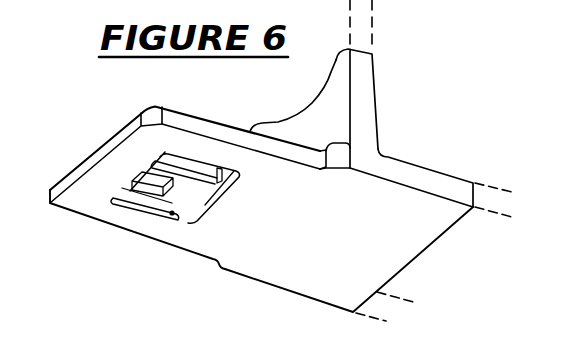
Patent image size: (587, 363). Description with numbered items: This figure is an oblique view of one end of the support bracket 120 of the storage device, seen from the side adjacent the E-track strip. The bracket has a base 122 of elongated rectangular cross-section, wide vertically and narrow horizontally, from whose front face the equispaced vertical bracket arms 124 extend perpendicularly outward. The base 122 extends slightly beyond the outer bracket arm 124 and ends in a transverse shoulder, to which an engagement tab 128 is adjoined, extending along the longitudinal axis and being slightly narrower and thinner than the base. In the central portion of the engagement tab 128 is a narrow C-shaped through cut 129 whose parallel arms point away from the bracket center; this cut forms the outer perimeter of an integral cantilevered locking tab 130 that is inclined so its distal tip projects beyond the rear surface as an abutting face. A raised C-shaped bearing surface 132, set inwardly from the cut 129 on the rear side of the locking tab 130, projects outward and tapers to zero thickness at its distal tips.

The support bracket 120 is at (390, 251).
The base 122 is at (407, 160).
The bracket arm 124 is at (376, 95).
The engagement tab 128 is at (197, 117).
The C-shaped cut 129 is at (125, 209).
The locking tab 130 is at (148, 199).
The bearing surface 132 is at (156, 213).